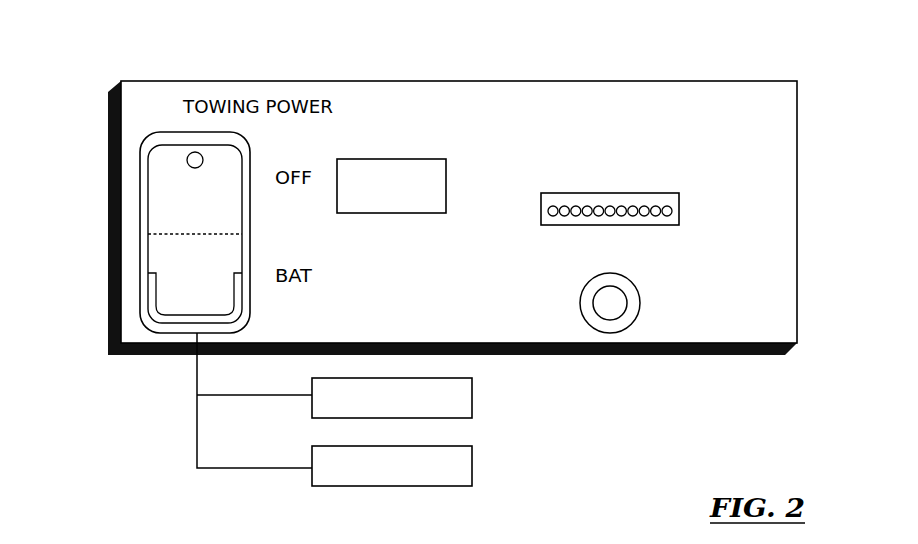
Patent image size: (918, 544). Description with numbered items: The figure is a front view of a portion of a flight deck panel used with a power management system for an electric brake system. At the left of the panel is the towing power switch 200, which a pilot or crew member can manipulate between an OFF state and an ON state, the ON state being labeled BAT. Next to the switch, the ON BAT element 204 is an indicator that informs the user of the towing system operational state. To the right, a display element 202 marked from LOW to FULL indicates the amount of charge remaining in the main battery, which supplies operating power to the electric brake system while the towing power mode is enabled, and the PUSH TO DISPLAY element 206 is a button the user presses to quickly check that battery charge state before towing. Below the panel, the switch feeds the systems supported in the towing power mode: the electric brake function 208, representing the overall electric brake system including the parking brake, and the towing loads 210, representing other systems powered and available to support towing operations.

The towing power switch 200 is at (140, 248).
The display element 202 is at (537, 192).
The ON BAT element 204 is at (400, 159).
The PUSH TO DISPLAY element 206 is at (627, 302).
The electric brake function 208 is at (473, 407).
The towing loads 210 is at (473, 470).